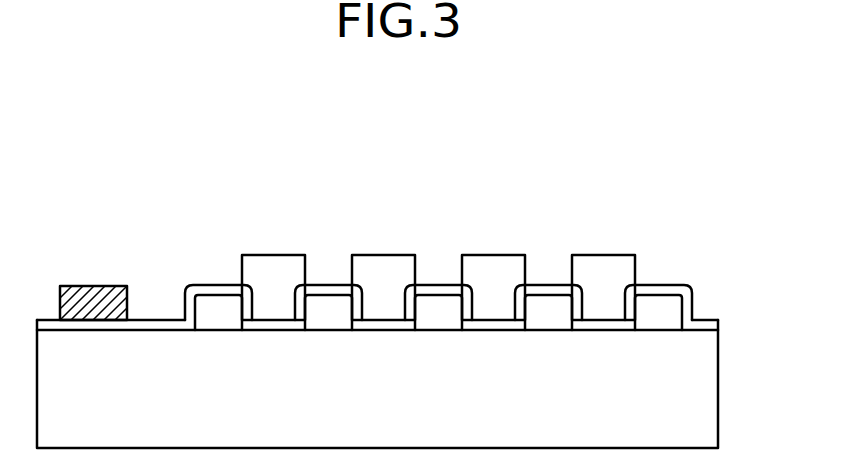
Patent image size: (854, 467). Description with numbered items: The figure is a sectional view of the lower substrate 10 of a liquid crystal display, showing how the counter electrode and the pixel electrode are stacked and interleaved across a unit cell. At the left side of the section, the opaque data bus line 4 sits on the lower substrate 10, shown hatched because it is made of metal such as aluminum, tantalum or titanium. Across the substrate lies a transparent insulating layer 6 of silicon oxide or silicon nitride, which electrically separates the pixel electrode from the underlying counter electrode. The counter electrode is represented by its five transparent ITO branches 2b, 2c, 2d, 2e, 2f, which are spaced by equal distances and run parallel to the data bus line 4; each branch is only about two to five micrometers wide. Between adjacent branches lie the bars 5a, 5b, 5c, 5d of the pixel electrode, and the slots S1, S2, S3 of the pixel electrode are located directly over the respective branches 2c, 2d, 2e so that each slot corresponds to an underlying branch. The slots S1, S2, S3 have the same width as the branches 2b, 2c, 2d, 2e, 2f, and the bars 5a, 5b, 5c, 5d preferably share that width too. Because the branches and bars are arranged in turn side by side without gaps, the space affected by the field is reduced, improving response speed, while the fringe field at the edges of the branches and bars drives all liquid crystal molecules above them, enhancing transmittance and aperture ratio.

The lower substrate 10 is at (718, 387).
The insulating layer 6 is at (718, 322).
The data bus line 4 is at (93, 288).
The branch 2b is at (218, 303).
The branch 2c is at (332, 303).
The branch 2d is at (443, 303).
The branch 2e is at (555, 303).
The branch 2f is at (665, 303).
The bar 5a is at (271, 267).
The bar 5b is at (384, 267).
The bar 5c is at (495, 267).
The bar 5d is at (602, 267).
The slot S1 is at (342, 253).
The slot S2 is at (457, 253).
The slot S3 is at (567, 253).